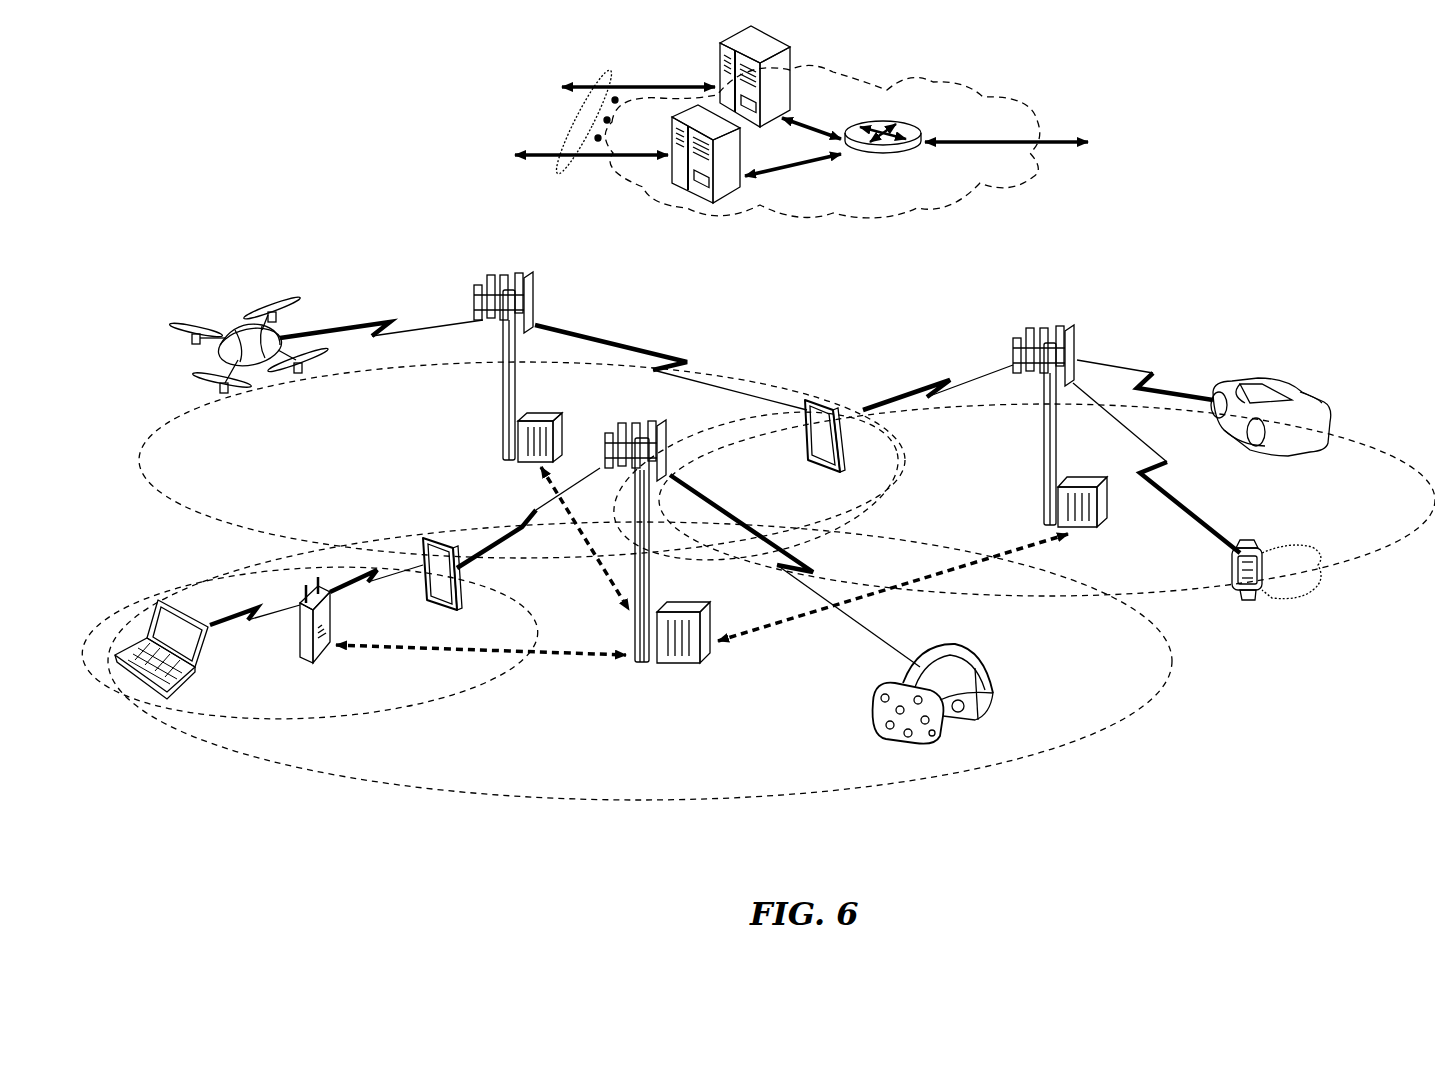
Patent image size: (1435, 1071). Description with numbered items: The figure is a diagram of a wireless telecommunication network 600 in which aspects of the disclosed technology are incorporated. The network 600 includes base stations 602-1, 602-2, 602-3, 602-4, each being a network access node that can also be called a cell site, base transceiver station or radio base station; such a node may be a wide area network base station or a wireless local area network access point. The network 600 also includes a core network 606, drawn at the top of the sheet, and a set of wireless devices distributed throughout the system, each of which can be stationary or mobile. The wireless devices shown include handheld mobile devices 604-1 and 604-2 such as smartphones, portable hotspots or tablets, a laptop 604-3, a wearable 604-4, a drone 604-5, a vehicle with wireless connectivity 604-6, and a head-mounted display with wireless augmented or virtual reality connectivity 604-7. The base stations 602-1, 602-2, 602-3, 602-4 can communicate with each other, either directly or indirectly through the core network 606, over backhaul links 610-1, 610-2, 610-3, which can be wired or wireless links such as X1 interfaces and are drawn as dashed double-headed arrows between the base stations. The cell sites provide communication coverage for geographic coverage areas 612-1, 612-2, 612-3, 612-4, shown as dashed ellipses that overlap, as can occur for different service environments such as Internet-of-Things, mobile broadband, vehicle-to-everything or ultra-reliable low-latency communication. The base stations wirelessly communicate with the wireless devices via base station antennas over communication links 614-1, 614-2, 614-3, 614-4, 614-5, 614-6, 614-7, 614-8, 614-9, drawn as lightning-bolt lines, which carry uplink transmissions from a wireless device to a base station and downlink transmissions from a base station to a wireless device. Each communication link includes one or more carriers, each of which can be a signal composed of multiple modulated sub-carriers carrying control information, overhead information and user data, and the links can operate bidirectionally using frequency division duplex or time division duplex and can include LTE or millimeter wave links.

The wireless telecommunication network 600 is at (1348, 130).
The core network 606 is at (915, 210).
The base station 602-1 is at (643, 664).
The base station 602-2 is at (500, 407).
The base station 602-3 is at (1040, 442).
The base station 602-4 is at (300, 650).
The handheld mobile device 604-1 is at (460, 587).
The handheld mobile device 604-2 is at (802, 440).
The laptop 604-3 is at (140, 692).
The wearable 604-4 is at (1257, 548).
The drone 604-5 is at (258, 373).
The vehicle with wireless connectivity 604-6 is at (1298, 388).
The head-mounted display 604-7 is at (993, 680).
The backhaul link 610-1 is at (370, 648).
The backhaul link 610-2 is at (960, 575).
The backhaul link 610-3 is at (600, 572).
The geographic coverage area 612-1 is at (567, 802).
The geographic coverage area 612-2 is at (440, 707).
The geographic coverage area 612-3 is at (203, 523).
The geographic coverage area 612-4 is at (1353, 440).
The communication link 614-1 is at (810, 568).
The communication link 614-2 is at (523, 510).
The communication link 614-3 is at (223, 623).
The communication link 614-4 is at (370, 587).
The communication link 614-5 is at (378, 318).
The communication link 614-6 is at (677, 358).
The communication link 614-7 is at (930, 378).
The communication link 614-8 is at (1173, 485).
The communication link 614-9 is at (1140, 372).